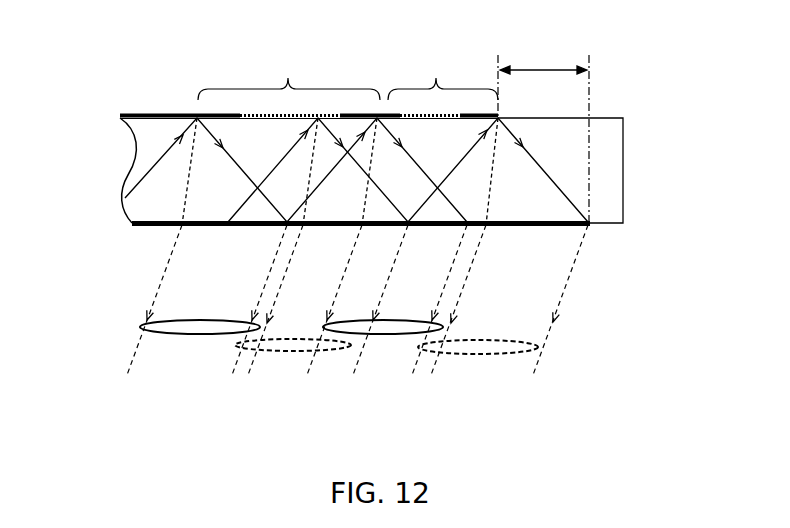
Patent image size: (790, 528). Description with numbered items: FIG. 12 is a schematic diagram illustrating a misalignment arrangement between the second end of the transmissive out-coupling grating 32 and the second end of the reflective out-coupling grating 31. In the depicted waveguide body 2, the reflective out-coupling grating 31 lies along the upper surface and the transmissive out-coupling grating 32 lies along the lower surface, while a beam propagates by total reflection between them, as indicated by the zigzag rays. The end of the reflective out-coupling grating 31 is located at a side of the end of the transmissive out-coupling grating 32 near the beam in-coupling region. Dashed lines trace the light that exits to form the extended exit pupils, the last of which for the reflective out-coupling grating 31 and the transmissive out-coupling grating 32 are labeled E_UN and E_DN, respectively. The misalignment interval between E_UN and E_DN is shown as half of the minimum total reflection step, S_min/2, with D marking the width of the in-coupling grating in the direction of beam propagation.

The light guide plate 2 is at (598, 168).
The reflective out-coupling grating 31 is at (124, 110).
The transmissive out-coupling grating 32 is at (131, 230).